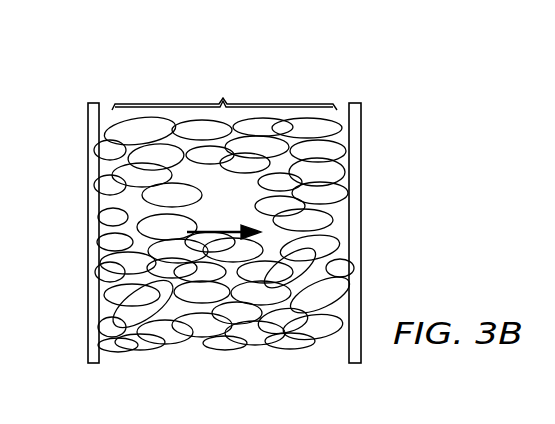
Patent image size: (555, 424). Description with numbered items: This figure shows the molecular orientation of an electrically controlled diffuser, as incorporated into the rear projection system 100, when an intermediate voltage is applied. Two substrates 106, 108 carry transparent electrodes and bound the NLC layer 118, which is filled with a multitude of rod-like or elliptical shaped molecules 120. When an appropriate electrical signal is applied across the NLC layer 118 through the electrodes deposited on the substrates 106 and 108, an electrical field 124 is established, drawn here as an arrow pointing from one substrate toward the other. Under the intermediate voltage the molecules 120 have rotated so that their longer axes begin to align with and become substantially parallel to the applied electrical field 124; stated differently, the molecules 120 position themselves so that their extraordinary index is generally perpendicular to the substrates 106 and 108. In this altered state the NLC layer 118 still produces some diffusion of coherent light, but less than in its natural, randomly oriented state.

The rear projection system 100 is at (118, 69).
The substrate 106 is at (88, 160).
The substrate 108 is at (361, 162).
The NLC layer 118 is at (224, 90).
The molecules 120 is at (145, 345).
The applied electrical field 124 is at (214, 230).